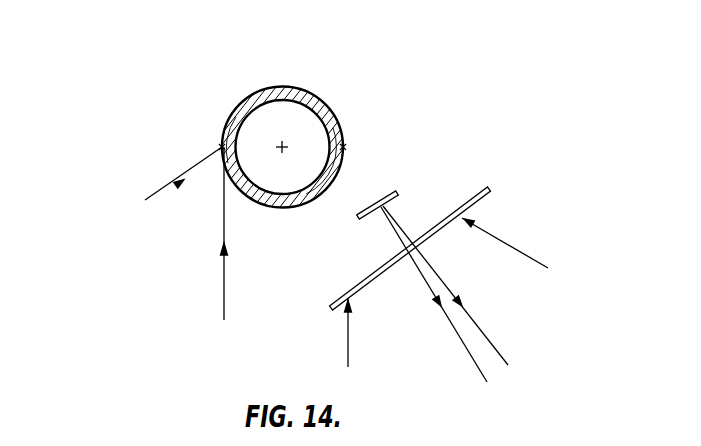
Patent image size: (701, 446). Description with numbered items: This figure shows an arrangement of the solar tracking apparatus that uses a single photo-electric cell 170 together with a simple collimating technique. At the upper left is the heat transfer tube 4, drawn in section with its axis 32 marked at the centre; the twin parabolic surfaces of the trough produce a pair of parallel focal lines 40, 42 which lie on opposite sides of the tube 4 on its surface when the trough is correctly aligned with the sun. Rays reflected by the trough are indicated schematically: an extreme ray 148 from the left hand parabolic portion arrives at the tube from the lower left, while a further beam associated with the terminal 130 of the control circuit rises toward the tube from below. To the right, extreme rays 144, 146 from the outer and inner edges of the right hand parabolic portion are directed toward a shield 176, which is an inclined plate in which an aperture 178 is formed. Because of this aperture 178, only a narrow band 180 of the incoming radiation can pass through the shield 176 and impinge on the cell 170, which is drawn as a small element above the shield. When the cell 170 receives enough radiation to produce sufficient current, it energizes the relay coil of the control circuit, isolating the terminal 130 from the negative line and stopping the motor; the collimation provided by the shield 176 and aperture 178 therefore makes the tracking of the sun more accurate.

The heat transfer tube 4 is at (288, 87).
The axis 32 is at (283, 145).
The focal line 40 is at (222, 146).
The focal line 42 is at (341, 147).
The terminal 130 is at (223, 290).
The extreme ray 148 is at (172, 184).
The cell 170 is at (376, 204).
The shield 176 is at (382, 273).
The extreme ray 144 is at (500, 240).
The extreme ray 146 is at (348, 350).
The aperture 178 is at (412, 252).
The narrow band of radiation 180 is at (468, 332).